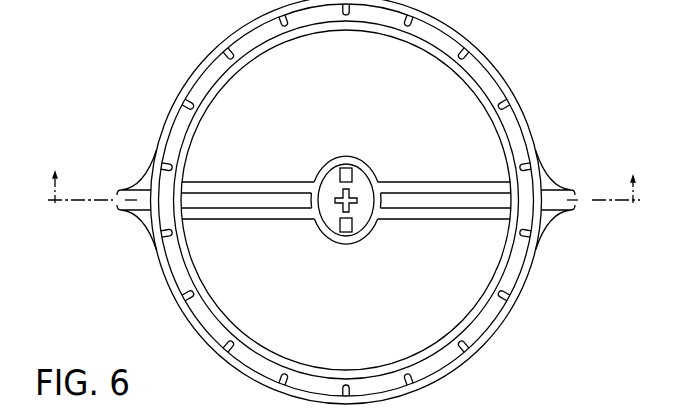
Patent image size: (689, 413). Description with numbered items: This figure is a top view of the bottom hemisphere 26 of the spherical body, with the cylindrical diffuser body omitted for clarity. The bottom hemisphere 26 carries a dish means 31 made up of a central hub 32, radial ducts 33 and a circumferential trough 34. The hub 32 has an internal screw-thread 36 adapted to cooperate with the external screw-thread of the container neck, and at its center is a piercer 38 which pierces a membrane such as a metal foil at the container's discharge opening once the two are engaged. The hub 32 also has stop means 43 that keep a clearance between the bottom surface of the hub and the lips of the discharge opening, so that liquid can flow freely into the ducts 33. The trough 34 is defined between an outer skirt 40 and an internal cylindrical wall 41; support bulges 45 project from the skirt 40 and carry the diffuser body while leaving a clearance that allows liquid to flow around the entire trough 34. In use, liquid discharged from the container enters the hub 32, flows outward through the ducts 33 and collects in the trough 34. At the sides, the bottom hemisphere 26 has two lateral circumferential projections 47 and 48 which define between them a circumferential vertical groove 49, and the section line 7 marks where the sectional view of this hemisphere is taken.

The bottom hemisphere 26 is at (172, 77).
The dish means 31 is at (534, 145).
The central hub 32 is at (321, 167).
The radial ducts 33 is at (212, 183).
The circumferential trough 34 is at (161, 121).
The internal screw-thread 36 is at (375, 177).
The piercer 38 is at (341, 208).
The skirt 40 is at (497, 72).
The internal cylindrical wall 41 is at (505, 126).
The stop means 43 is at (349, 167).
The support bulges 45 is at (470, 350).
The lateral circumferential projection 47 is at (569, 187).
The lateral circumferential projection 48 is at (560, 218).
The circumferential vertical groove 49 is at (575, 206).
The section line 7- 7 is at (344, 200).